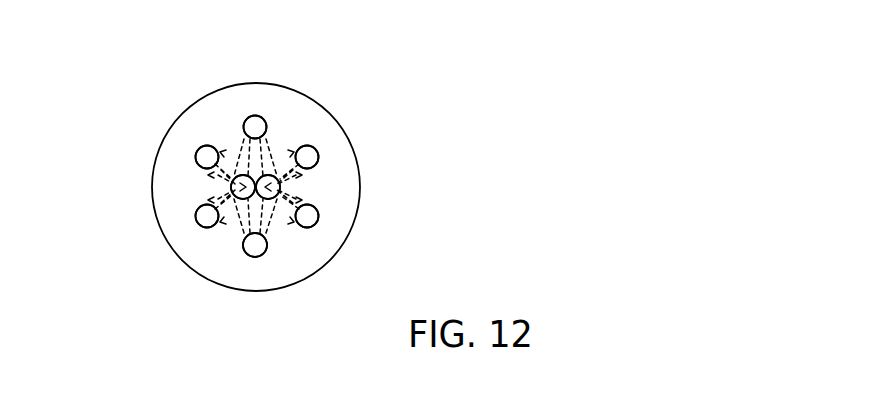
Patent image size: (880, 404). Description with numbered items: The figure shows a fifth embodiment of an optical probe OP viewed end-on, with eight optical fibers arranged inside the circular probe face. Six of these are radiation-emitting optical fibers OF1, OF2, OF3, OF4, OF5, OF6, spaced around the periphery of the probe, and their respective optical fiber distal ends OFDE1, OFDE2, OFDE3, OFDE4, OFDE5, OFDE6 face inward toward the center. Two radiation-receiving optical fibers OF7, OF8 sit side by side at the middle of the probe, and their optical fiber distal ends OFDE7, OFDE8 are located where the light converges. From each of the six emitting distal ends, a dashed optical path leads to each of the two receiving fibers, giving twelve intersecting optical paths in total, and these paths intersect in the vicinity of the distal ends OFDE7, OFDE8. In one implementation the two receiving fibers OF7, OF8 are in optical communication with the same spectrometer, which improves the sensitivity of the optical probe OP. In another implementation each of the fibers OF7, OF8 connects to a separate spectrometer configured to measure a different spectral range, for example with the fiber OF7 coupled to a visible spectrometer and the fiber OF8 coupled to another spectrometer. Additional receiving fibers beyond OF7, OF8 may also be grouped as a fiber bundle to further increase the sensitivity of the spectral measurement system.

The optical probe OP is at (255, 84).
The radiation-emitting optical fiber OF1 is at (257, 128).
The radiation-emitting optical fiber OF2 is at (307, 157).
The radiation-emitting optical fiber OF3 is at (307, 216).
The radiation-emitting optical fiber OF4 is at (255, 245).
The radiation-emitting optical fiber OF5 is at (207, 216).
The radiation-emitting optical fiber OF6 is at (207, 157).
The radiation-receiving optical fiber OF7 is at (268, 187).
The radiation-receiving optical fiber OF8 is at (243, 187).
The optical fiber distal end OFDE1 is at (266, 126).
The optical fiber distal end OFDE2 is at (319, 158).
The optical fiber distal end OFDE3 is at (315, 225).
The optical fiber distal end OFDE4 is at (254, 257).
The optical fiber distal end OFDE5 is at (198, 224).
The optical fiber distal end OFDE6 is at (196, 157).
The optical fiber distal end OFDE7 is at (280, 187).
The optical fiber distal end OFDE8 is at (231, 187).